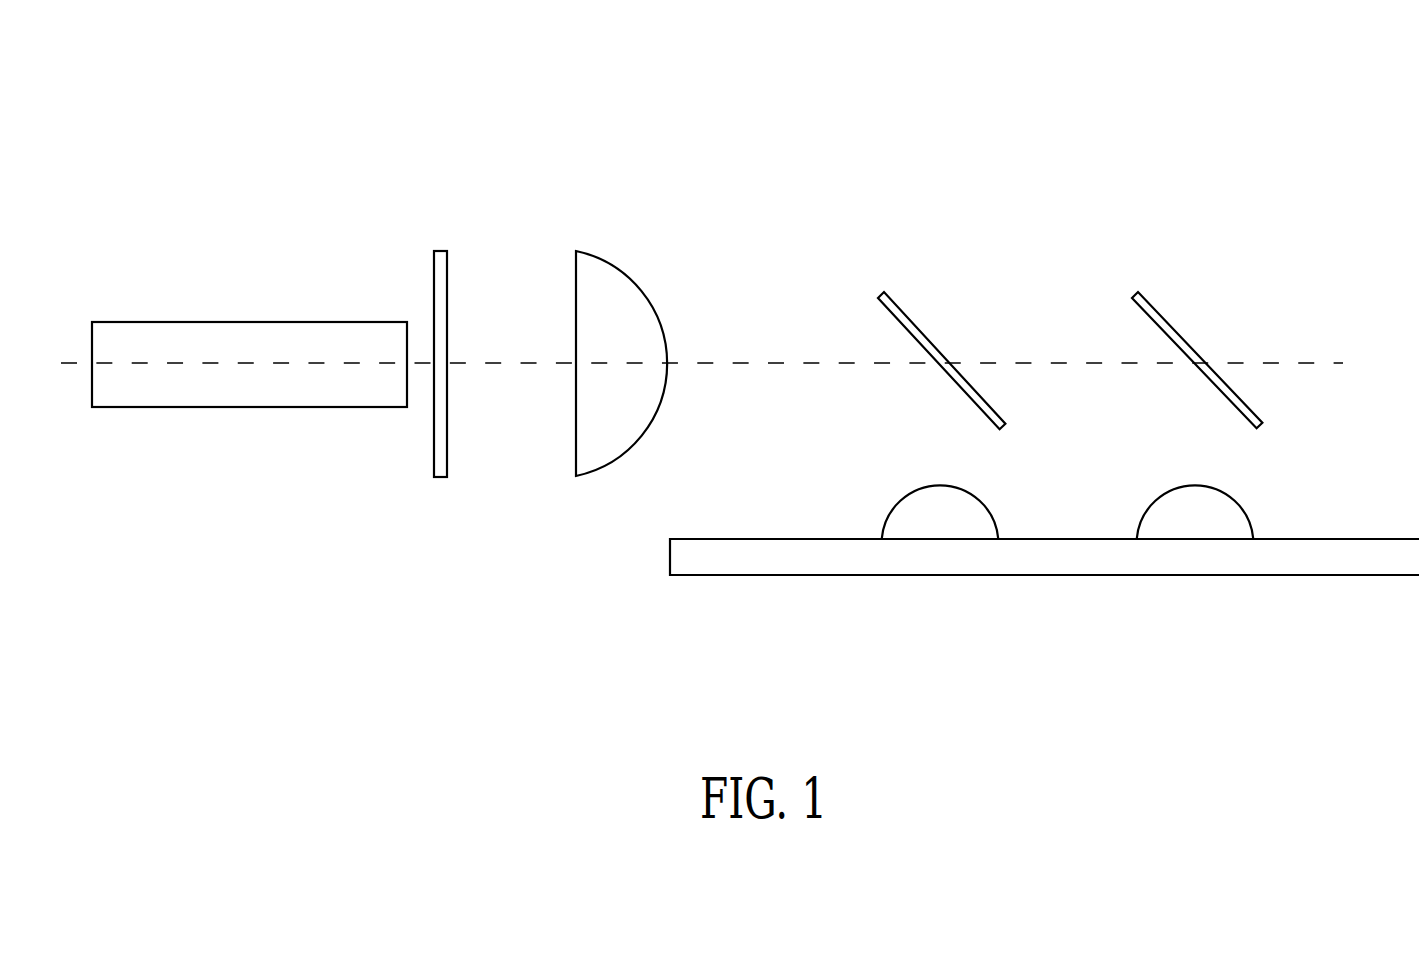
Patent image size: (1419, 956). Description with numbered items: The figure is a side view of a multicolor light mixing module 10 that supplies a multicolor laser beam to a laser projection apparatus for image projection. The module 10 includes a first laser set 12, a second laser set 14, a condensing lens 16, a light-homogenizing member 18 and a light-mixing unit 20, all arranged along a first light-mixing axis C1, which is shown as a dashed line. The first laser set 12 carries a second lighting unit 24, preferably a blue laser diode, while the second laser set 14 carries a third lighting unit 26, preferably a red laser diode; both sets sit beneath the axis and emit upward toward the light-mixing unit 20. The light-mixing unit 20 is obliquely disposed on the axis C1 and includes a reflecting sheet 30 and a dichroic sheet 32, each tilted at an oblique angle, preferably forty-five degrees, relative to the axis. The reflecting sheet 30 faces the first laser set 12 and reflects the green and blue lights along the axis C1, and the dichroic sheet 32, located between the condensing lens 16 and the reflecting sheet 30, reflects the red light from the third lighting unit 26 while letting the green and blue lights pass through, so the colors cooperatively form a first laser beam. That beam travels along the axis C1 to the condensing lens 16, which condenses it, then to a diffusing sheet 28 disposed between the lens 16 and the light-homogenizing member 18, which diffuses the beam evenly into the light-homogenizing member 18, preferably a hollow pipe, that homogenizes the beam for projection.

The multicolor light mixing module 10 is at (282, 115).
The first laser set 12 is at (1251, 483).
The second laser set 14 is at (870, 490).
The condensing lens 16 is at (608, 278).
The light-homogenizing member 18 is at (257, 336).
The light-mixing unit 20 is at (1247, 316).
The second lighting unit 24 is at (1168, 506).
The third lighting unit 26 is at (965, 506).
The diffusing sheet 28 is at (432, 266).
The reflecting sheet 30 is at (1160, 318).
The dichroic sheet 32 is at (905, 318).
The first light-mixing axis C1 is at (719, 365).